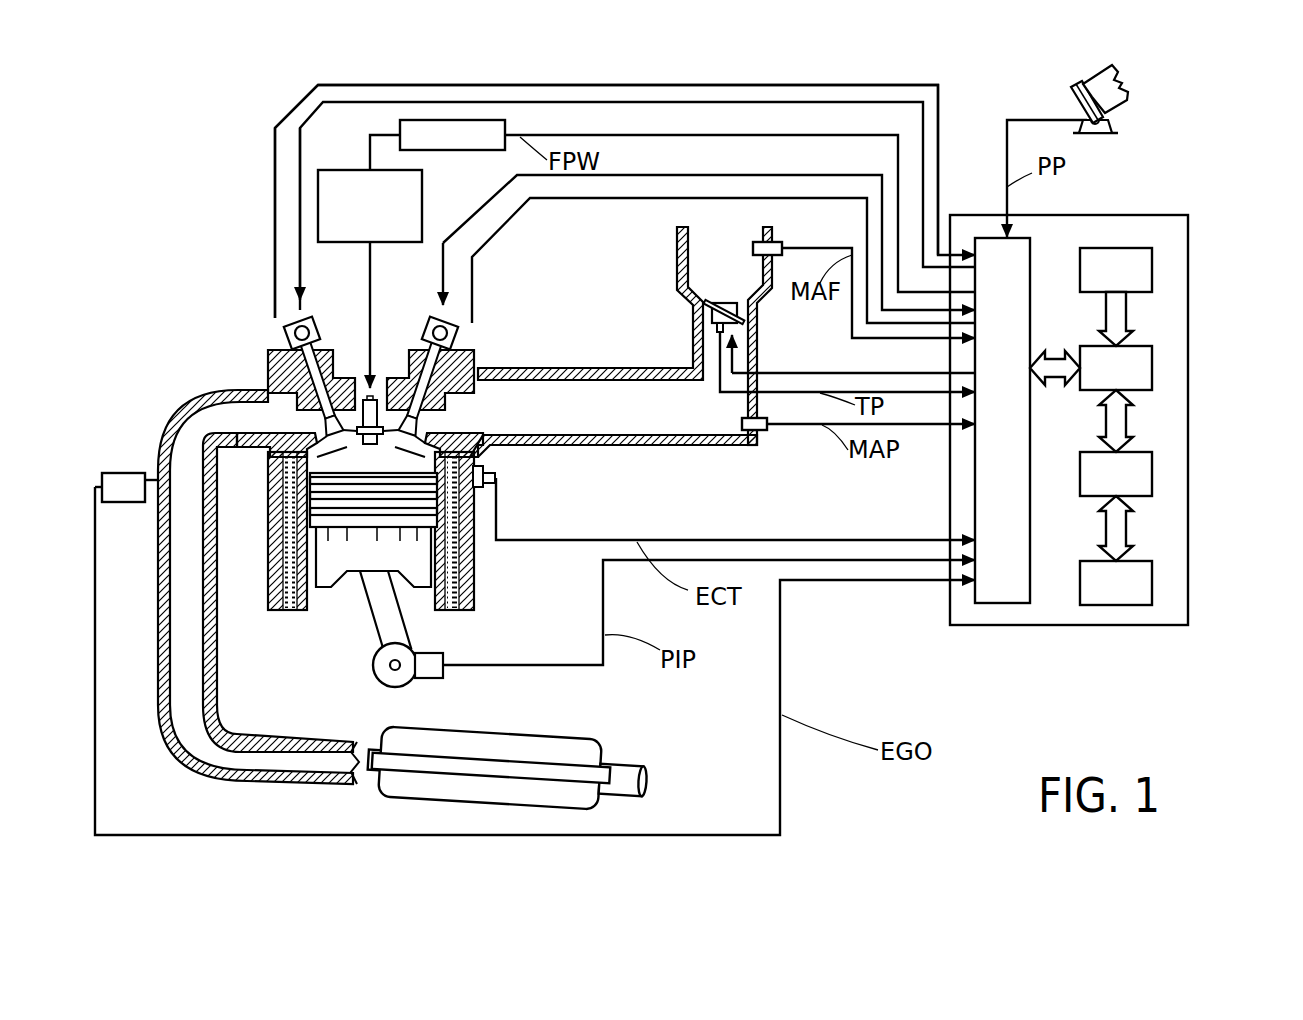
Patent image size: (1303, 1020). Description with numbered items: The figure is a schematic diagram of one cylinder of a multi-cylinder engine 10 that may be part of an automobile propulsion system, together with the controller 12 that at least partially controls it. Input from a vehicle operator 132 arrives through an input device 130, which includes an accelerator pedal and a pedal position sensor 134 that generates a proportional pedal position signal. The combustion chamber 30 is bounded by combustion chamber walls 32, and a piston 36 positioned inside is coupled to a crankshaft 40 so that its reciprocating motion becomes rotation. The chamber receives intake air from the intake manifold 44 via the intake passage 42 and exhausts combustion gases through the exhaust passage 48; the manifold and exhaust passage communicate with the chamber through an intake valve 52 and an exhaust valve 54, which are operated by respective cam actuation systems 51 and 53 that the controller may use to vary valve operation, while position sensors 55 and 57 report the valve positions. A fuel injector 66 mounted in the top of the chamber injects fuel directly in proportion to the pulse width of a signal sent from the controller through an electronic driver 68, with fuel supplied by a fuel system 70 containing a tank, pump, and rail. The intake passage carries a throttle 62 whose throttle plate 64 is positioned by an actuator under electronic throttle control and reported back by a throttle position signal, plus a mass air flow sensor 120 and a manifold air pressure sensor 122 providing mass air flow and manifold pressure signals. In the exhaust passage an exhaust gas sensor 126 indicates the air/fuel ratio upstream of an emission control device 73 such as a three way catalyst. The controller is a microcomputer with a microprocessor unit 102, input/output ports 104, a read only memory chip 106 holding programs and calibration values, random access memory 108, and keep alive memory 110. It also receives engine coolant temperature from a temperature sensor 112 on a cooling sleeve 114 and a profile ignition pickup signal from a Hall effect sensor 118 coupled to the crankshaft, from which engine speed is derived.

The engine 10 is at (200, 298).
The controller 12 is at (1190, 214).
The combustion chamber 30 is at (345, 457).
The combustion chamber walls 32 is at (313, 597).
The piston 36 is at (356, 560).
The crankshaft 40 is at (385, 685).
The intake passage 42 is at (740, 277).
The intake manifold 44 is at (672, 420).
The exhaust passage 48 is at (254, 429).
The cam actuation system 51 is at (428, 318).
The intake valve 52 is at (440, 412).
The cam actuation system 53 is at (312, 318).
The exhaust valve 54 is at (313, 403).
The position sensor 55 is at (455, 342).
The position sensor 57 is at (283, 335).
The throttle 62 is at (739, 303).
The throttle plate 64 is at (706, 302).
The fuel injector 66 is at (373, 394).
The electronic driver 68 is at (485, 150).
The fuel system 70 is at (425, 218).
The emission control device 73 is at (560, 738).
The microprocessor unit 102 is at (1153, 365).
The input/output ports 104 is at (1033, 247).
The read only memory chip 106 is at (1153, 268).
The random access memory 108 is at (1153, 470).
The keep alive memory 110 is at (1153, 578).
The temperature sensor 112 is at (487, 477).
The cooling sleeve 114 is at (470, 563).
The Hall effect sensor 118 is at (430, 681).
The mass air flow sensor 120 is at (775, 240).
The manifold air pressure sensor 122 is at (765, 432).
The exhaust gas sensor 126 is at (87, 477).
The input device 130 is at (1072, 95).
The vehicle operator 132 is at (1123, 83).
The pedal position sensor 134 is at (1120, 122).